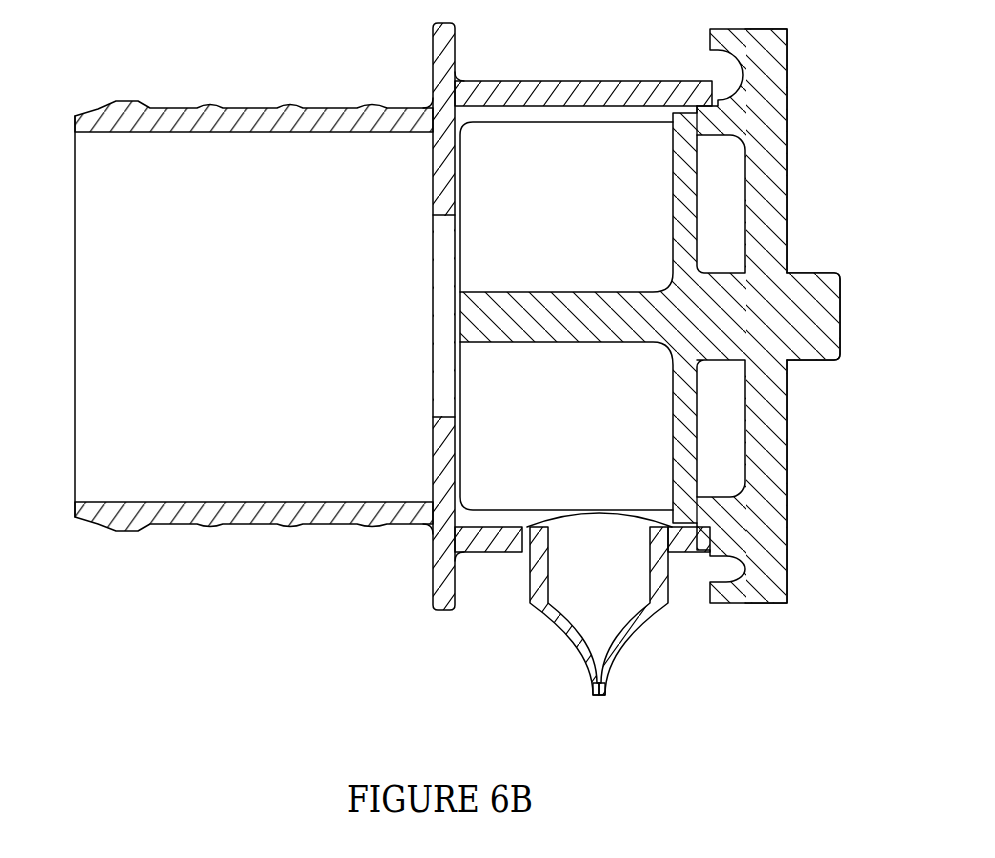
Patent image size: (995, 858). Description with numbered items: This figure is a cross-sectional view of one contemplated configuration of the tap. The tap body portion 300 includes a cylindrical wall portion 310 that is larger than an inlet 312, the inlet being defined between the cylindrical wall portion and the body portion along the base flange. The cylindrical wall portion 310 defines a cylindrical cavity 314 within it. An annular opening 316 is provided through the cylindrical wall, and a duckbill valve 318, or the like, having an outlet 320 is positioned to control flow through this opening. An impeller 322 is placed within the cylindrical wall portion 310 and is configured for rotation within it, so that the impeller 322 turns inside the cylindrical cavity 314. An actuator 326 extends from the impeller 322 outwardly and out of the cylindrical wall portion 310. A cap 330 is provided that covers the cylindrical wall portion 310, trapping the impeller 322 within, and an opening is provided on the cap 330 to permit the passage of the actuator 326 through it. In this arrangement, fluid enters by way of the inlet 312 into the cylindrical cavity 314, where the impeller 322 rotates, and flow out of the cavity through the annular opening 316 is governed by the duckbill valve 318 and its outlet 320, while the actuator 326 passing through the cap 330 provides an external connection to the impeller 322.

The tap body portion 300 is at (119, 72).
The cylindrical wall portion 310 is at (686, 66).
The inlet 312 is at (432, 315).
The cylindrical cavity 314 is at (652, 144).
The annular opening 316 is at (668, 604).
The duckbill valve 318 is at (527, 602).
The outlet 320 is at (599, 697).
The impeller 322 is at (532, 144).
The actuator 326 is at (806, 262).
The cap 330 is at (790, 485).